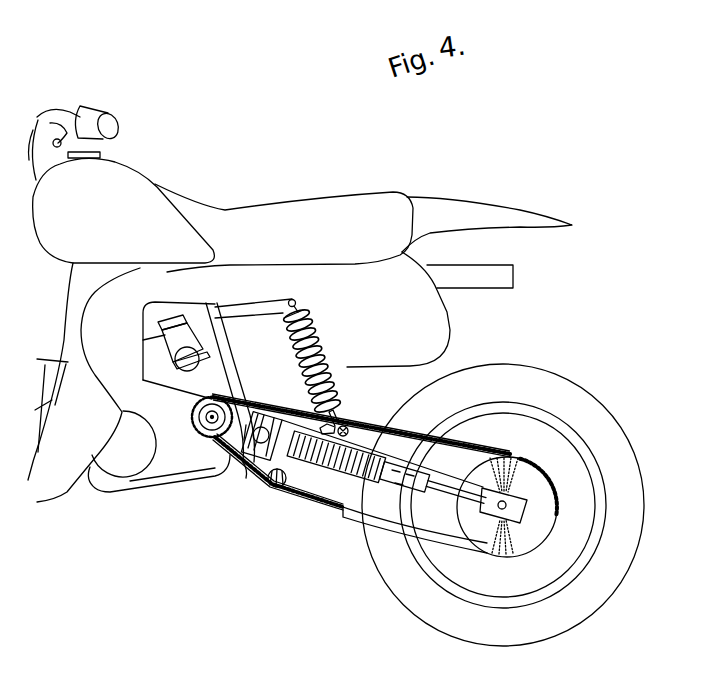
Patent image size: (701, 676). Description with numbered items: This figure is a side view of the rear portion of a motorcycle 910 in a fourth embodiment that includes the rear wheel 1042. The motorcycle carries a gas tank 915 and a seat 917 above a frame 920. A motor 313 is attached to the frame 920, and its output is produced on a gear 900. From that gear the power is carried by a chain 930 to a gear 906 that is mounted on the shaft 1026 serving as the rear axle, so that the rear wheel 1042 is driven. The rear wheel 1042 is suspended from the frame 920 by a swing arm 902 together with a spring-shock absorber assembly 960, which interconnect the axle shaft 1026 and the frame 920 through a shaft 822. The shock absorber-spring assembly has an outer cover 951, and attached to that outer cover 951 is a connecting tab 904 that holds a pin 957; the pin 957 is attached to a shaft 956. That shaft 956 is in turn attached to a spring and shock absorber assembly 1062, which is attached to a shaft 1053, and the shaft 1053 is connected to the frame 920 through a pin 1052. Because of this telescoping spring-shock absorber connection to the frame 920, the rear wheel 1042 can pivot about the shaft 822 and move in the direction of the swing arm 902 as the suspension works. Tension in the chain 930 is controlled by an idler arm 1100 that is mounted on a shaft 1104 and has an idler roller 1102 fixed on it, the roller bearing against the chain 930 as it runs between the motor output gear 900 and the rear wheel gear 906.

The motorcycle 910 is at (186, 177).
The gas tank 915 is at (122, 180).
The seat 917 is at (305, 216).
The frame 920 is at (238, 413).
The gear 900 is at (211, 443).
The motor 313 is at (138, 460).
The chain 930 is at (197, 405).
The shaft 1104 is at (238, 460).
The idler roller 1102 is at (285, 497).
The idler arm 1100 is at (265, 467).
The connecting tab 904 is at (367, 428).
The shaft 956 is at (353, 423).
The pin 957 is at (357, 422).
The outer cover 951 is at (300, 470).
The spring-shock absorber assembly 960 is at (334, 468).
The swing arm 902 is at (447, 493).
The shaft 822 is at (260, 417).
The pin 1052 is at (294, 302).
The shaft 1053 is at (303, 306).
The spring and shock absorber assembly 1062 is at (314, 333).
The rear wheel 1042 is at (512, 380).
The gear 906 is at (528, 487).
The shaft 1026 is at (504, 507).